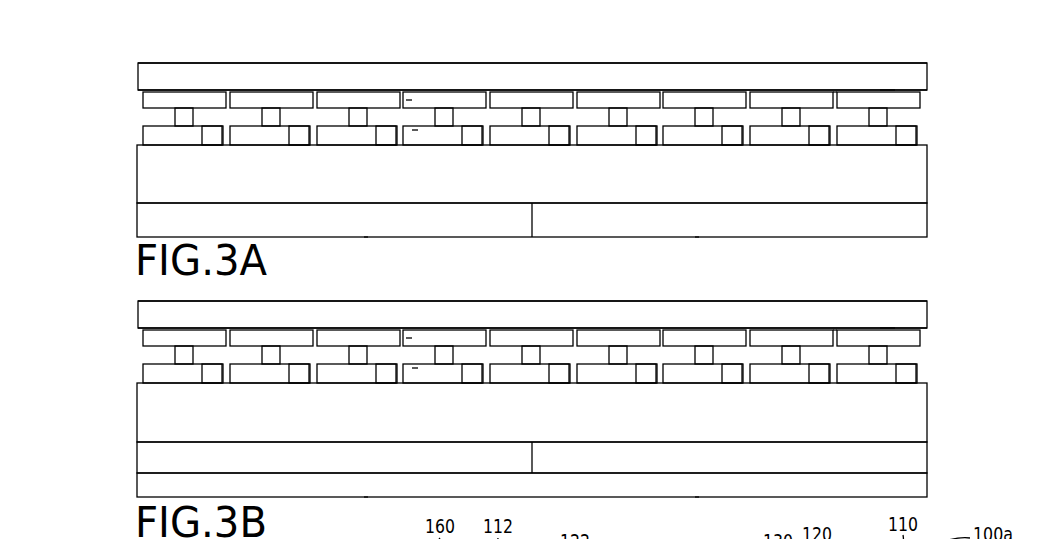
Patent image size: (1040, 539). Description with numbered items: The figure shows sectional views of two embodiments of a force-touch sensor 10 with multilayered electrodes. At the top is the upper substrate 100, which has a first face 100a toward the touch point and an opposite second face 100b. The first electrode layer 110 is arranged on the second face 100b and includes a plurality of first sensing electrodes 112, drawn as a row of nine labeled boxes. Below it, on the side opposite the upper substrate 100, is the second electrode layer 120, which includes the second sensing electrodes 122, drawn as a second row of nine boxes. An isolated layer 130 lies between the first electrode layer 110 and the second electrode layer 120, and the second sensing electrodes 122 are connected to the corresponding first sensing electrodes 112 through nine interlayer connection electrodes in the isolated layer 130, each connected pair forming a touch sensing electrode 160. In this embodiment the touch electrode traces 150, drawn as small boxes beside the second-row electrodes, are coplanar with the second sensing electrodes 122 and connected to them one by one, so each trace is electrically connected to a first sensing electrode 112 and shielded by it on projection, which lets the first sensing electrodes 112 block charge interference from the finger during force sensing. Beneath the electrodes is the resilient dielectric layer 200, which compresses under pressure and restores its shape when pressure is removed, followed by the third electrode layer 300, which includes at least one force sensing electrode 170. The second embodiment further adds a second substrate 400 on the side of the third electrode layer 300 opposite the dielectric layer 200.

In FIG. 3A, the force-touch sensor 10 is at (74, 77).
In FIG. 3B, the force-touch sensor 10 is at (93, 383).
In FIG. 3A, the upper substrate 100 is at (922, 80).
In FIG. 3B, the upper substrate 100 is at (574, 308).
In FIG. 3A, the first face 100a is at (913, 63).
In FIG. 3B, the first face 100a is at (575, 281).
In FIG. 3A, the second face 100b is at (845, 91).
In FIG. 3B, the second face 100b is at (556, 369).
In FIG. 3A, the first electrode layer 110 is at (887, 90).
In FIG. 3B, the first electrode layer 110 is at (899, 290).
In FIG. 3A, the first sensing electrodes 112 is at (505, 102).
In FIG. 3B, the first sensing electrodes 112 is at (531, 301).
In FIG. 3A, the second electrode layer 120 is at (843, 122).
In FIG. 3B, the second electrode layer 120 is at (824, 311).
In FIG. 3A, the second sensing electrodes 122 is at (545, 130).
In FIG. 3B, the second sensing electrodes 122 is at (559, 327).
In FIG. 3A, the isolated layer 130 is at (825, 117).
In FIG. 3B, the isolated layer 130 is at (531, 317).
In FIG. 3A, the touch electrode traces 150 is at (919, 134).
In FIG. 3B, the touch electrode traces 150 is at (571, 365).
In FIG. 3A, the touch sensing electrodes 160 is at (415, 130).
In FIG. 3B, the touch sensing electrodes 160 is at (430, 311).
In FIG. 3A, the force sensing electrode 170 is at (367, 228).
In FIG. 3B, the force sensing electrode 170 is at (367, 467).
In FIG. 3A, the resilient dielectric layer 200 is at (922, 175).
In FIG. 3B, the resilient dielectric layer 200 is at (922, 413).
In FIG. 3A, the third electrode layer 300 is at (922, 221).
In FIG. 3B, the third electrode layer 300 is at (922, 458).
In FIG. 3B, the second substrate 400 is at (922, 486).